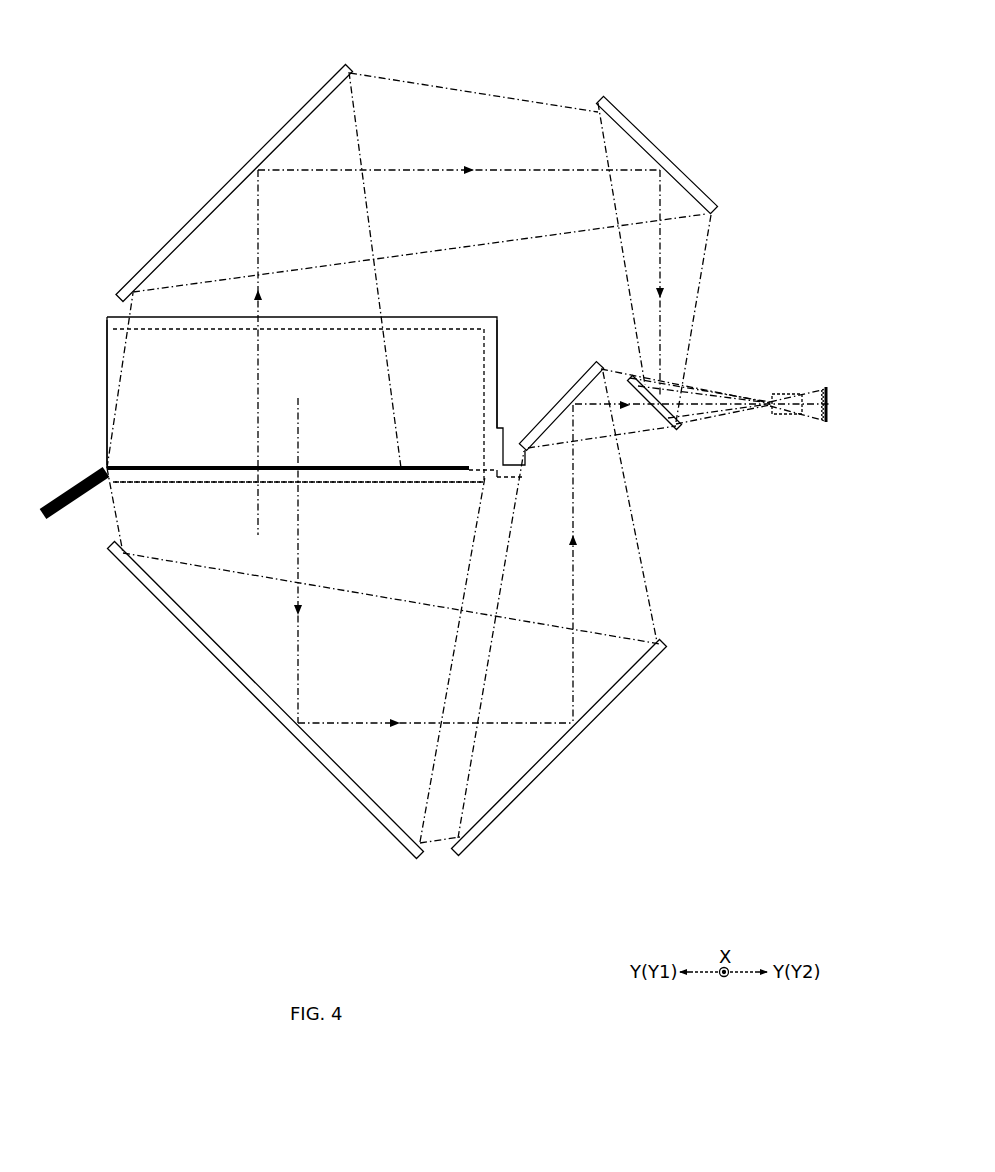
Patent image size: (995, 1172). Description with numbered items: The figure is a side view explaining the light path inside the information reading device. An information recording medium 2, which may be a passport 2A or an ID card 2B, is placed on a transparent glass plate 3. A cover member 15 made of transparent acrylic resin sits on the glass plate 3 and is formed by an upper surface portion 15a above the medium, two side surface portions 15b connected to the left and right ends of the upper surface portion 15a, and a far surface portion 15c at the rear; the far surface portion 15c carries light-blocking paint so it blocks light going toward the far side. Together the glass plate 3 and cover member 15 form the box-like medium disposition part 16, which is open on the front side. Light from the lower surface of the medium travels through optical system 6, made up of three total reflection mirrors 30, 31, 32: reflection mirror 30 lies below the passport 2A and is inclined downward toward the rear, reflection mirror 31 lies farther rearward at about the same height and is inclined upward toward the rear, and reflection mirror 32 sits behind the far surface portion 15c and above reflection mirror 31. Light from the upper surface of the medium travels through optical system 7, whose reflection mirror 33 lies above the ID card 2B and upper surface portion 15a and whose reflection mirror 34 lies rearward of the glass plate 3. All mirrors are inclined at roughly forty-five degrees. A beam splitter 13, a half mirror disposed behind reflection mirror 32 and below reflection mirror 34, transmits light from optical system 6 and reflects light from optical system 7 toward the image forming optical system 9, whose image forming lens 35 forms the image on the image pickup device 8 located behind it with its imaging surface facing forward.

The information recording medium 2 is at (256, 475).
The passport 2A is at (430, 473).
The ID card 2B is at (185, 467).
The glass plate 3 is at (342, 483).
The optical system 6 is at (288, 890).
The optical system 7 is at (237, 37).
The image pickup device 8 is at (825, 425).
The image forming optical system 9 is at (787, 358).
The beam splitter 13 is at (665, 427).
The cover member 15 is at (316, 377).
The upper surface portion 15a is at (437, 318).
The side surface portion 15b is at (106, 350).
The far surface portion 15c is at (499, 383).
The medium disposition part 16 is at (88, 411).
The reflection mirror 30 is at (347, 787).
The reflection mirror 31 is at (518, 797).
The reflection mirror 32 is at (583, 364).
The reflection mirror 33 is at (279, 130).
The reflection mirror 34 is at (640, 132).
The image forming lens 35 is at (787, 420).